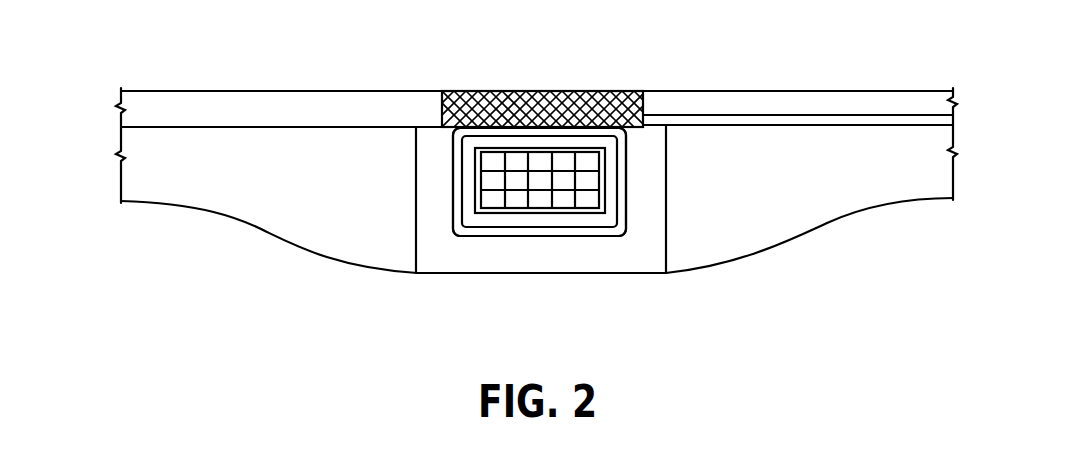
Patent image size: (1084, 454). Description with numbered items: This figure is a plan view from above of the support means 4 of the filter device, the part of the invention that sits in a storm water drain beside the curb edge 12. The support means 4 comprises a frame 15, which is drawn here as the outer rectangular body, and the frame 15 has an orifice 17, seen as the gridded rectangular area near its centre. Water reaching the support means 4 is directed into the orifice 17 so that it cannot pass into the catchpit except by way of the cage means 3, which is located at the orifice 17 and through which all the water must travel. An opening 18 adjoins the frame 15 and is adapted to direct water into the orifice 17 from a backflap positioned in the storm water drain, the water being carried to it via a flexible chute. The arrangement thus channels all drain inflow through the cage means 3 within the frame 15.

The curb edge 12 is at (553, 107).
The opening 18 is at (482, 130).
The support means 4 is at (647, 179).
The frame 15 is at (609, 203).
The cage means 3 is at (577, 200).
The orifice 17 is at (564, 202).